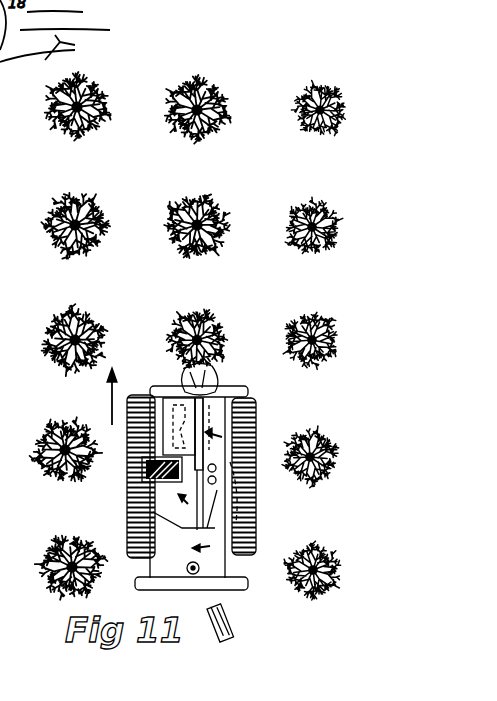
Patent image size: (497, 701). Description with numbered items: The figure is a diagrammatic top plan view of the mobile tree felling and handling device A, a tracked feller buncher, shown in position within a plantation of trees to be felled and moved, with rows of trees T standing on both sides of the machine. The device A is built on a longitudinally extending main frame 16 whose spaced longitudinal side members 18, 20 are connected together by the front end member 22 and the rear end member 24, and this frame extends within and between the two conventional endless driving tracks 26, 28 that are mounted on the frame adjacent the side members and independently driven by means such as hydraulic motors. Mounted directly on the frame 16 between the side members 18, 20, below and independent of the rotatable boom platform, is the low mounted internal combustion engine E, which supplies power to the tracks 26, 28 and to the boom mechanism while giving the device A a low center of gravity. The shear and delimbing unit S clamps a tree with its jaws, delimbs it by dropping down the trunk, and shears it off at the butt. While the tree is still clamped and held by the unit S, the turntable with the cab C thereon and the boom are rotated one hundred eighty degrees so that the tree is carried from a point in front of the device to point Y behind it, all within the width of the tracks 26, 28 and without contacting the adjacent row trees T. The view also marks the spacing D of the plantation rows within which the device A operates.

The trees T is at (290, 100).
The tree spacing D is at (182, 272).
The front end member 22 is at (178, 390).
The endless driving track 26 is at (258, 525).
The main frame 16 is at (250, 547).
The side member 18 is at (230, 570).
The side member 20 is at (140, 578).
The rear end member 24 is at (233, 592).
The endless driving track 28 is at (127, 532).
The shear and delimbing unit S is at (232, 364).
The internal combustion engine E is at (236, 381).
The mobile tree felling and handling device A is at (262, 425).
The cab C is at (136, 492).
The point Y is at (210, 604).